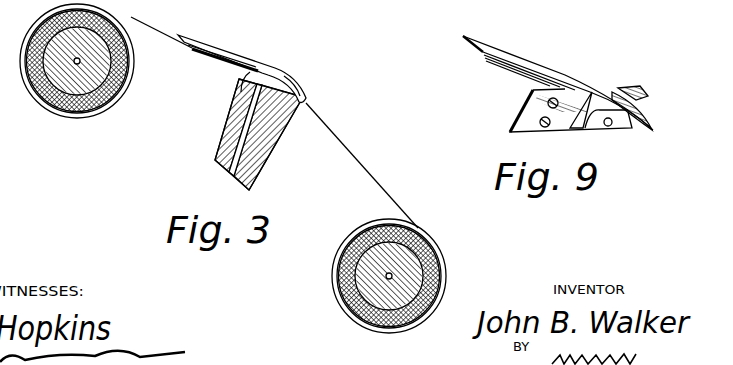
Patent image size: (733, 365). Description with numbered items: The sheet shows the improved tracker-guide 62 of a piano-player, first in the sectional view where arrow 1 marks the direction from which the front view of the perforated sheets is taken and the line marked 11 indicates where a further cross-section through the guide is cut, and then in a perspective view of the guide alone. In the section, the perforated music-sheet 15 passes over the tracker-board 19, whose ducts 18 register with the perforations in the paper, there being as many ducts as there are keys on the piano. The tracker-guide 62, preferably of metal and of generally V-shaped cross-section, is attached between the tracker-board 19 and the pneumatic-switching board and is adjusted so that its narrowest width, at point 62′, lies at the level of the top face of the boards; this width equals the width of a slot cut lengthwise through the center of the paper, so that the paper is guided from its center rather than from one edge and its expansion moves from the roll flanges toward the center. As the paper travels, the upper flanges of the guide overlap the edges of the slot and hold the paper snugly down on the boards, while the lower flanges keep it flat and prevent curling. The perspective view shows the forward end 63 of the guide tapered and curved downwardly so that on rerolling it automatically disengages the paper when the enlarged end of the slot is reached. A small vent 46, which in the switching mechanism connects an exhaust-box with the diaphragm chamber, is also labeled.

In FIG. 3, the arrow 1 is at (309, 53).
In FIG. 3, the section line 11 is at (253, 126).
In FIG. 3, the music-sheet 15 is at (143, 32).
In FIG. 3, the ducts 18 is at (240, 117).
In FIG. 3, the tracker-board 19 is at (266, 151).
In FIG. 3, the vent 46 is at (252, 6).
In FIG. 3, the tracker-guide 62 is at (234, 69).
In FIG. 9, the tracker-guide 62 is at (552, 83).
In FIG. 9, the narrowest point of the tracker-guide 62′ is at (483, 53).
In FIG. 9, the forward end 63 is at (658, 129).